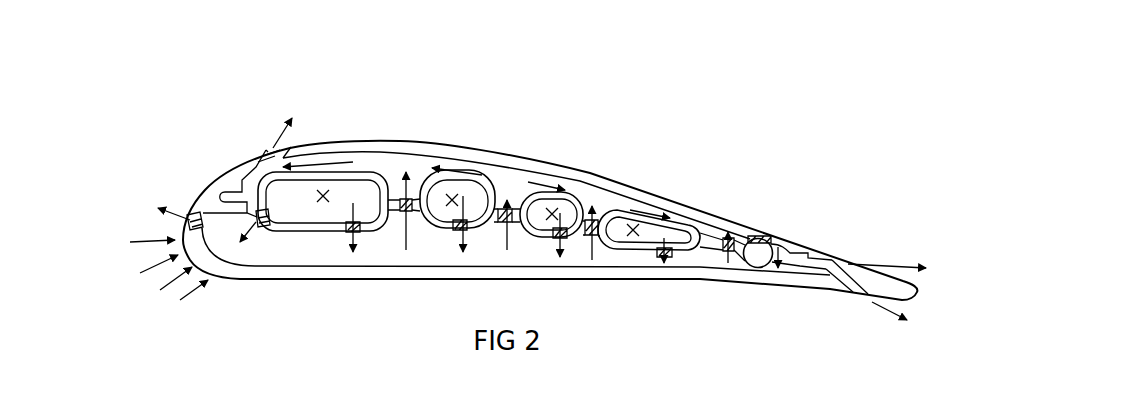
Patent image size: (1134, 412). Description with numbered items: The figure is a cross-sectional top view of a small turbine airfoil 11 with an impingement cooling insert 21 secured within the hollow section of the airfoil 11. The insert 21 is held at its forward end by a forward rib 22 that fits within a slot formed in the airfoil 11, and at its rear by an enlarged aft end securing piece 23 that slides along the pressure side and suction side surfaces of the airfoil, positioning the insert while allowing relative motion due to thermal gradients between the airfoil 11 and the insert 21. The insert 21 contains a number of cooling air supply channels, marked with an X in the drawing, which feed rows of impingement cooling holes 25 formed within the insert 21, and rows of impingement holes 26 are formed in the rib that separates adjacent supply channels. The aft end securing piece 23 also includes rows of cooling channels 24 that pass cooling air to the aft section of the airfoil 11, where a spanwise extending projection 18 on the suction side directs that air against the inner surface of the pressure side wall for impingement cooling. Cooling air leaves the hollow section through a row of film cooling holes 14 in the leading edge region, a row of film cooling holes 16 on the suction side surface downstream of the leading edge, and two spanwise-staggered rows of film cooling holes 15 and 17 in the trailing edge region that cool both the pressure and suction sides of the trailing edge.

The airfoil 11 is at (388, 148).
The film cooling holes 14 is at (195, 226).
The film cooling holes 15 is at (867, 297).
The film cooling holes 16 is at (272, 157).
The film cooling holes 17 is at (880, 261).
The spanwise extending projection 18 is at (791, 250).
The impingement cooling insert 21 is at (310, 224).
The forward rib 22 is at (233, 195).
The aft end securing piece 23 is at (755, 254).
The cooling channels 24 is at (760, 237).
The impingement cooling holes 25 is at (276, 204).
The impingement holes 26 is at (408, 200).